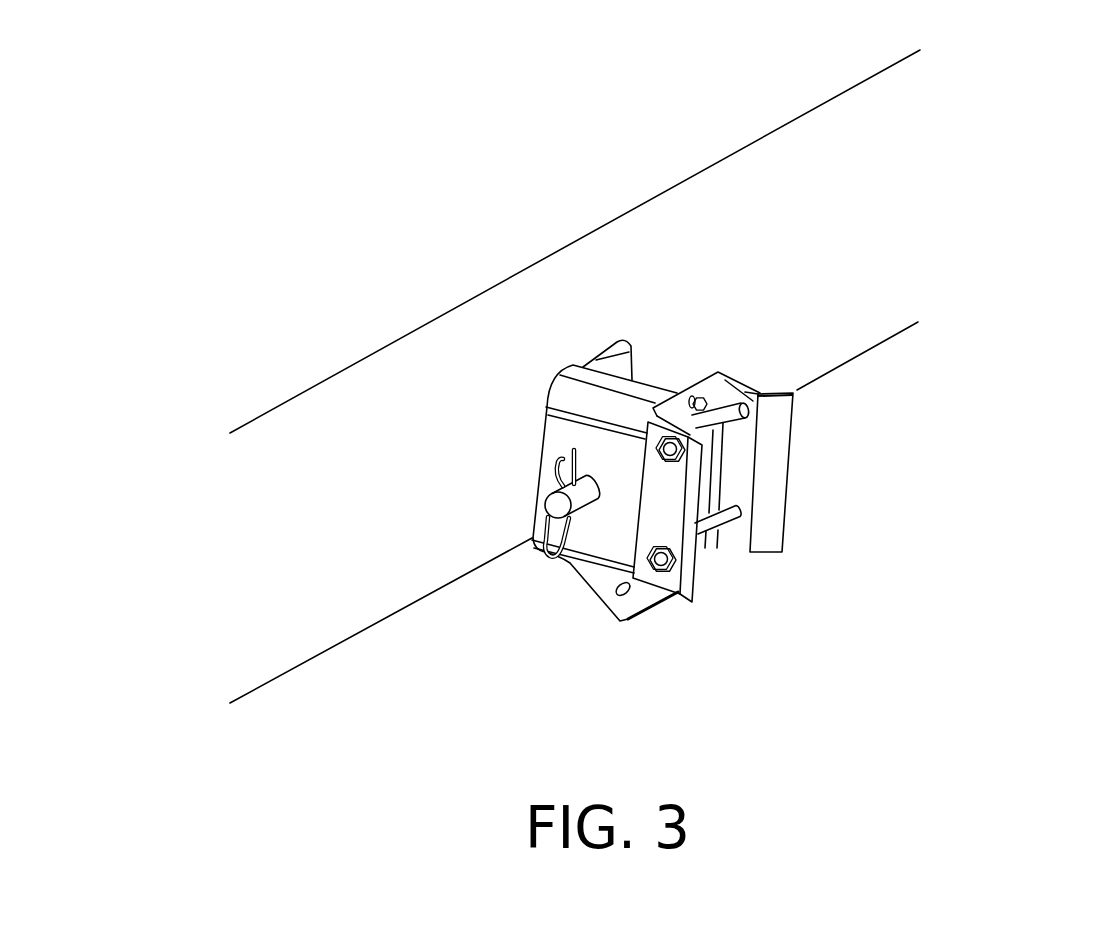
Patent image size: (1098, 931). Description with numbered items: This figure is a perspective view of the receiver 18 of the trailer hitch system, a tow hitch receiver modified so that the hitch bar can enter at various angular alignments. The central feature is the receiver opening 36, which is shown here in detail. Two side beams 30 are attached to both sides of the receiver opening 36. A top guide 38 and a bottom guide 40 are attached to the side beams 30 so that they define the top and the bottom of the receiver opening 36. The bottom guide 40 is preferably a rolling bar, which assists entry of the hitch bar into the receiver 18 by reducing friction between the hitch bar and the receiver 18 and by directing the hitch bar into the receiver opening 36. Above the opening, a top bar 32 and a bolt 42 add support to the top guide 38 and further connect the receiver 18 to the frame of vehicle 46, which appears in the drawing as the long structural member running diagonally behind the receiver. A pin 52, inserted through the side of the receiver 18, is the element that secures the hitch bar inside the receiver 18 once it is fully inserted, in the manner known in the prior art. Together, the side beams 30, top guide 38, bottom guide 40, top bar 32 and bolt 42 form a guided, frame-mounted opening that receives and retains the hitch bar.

The receiver 18 is at (625, 505).
The side beams 30 is at (773, 488).
The top bar 32 is at (712, 393).
The receiver opening 36 is at (708, 485).
The top guide 38 is at (744, 415).
The bottom guide 40 is at (715, 527).
The bolt 42 is at (620, 383).
The frame of vehicle 46 is at (757, 285).
The pin 52 is at (556, 500).